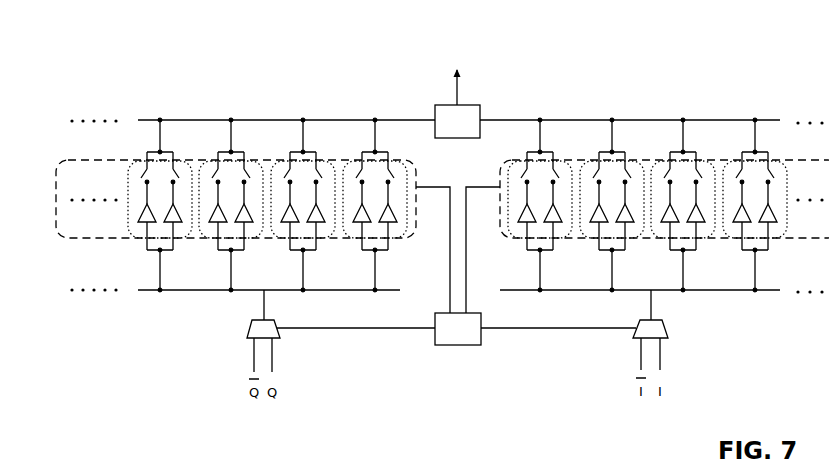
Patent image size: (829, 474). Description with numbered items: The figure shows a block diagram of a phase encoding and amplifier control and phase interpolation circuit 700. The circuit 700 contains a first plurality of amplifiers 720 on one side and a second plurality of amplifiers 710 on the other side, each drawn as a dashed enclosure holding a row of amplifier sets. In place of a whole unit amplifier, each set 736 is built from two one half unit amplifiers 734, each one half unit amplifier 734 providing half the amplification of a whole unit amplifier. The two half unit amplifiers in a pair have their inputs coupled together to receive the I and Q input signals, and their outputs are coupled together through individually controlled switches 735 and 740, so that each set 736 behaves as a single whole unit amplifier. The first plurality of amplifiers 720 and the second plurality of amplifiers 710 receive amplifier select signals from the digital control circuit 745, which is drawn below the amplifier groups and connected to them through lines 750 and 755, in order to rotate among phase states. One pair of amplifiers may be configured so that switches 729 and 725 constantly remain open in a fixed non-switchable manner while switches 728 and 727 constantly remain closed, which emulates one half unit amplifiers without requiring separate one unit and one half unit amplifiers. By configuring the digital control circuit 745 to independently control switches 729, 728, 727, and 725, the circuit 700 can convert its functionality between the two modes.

The phase encoding and amplifier control and phase interpolation circuit 700 is at (756, 56).
The second plurality of amplifiers 710 is at (490, 177).
The first plurality of amplifiers 720 is at (426, 177).
The switch 725 is at (562, 168).
The switch 727 is at (516, 168).
The switch 728 is at (394, 167).
The switch 729 is at (352, 167).
The one half unit amplifier 734 is at (278, 231).
The switch 735 is at (277, 168).
The set of half unit amplifiers 736 is at (336, 241).
The switch 740 is at (322, 167).
The digital control circuit 745 is at (459, 352).
The signal line 750 is at (472, 278).
The signal line 755 is at (444, 278).